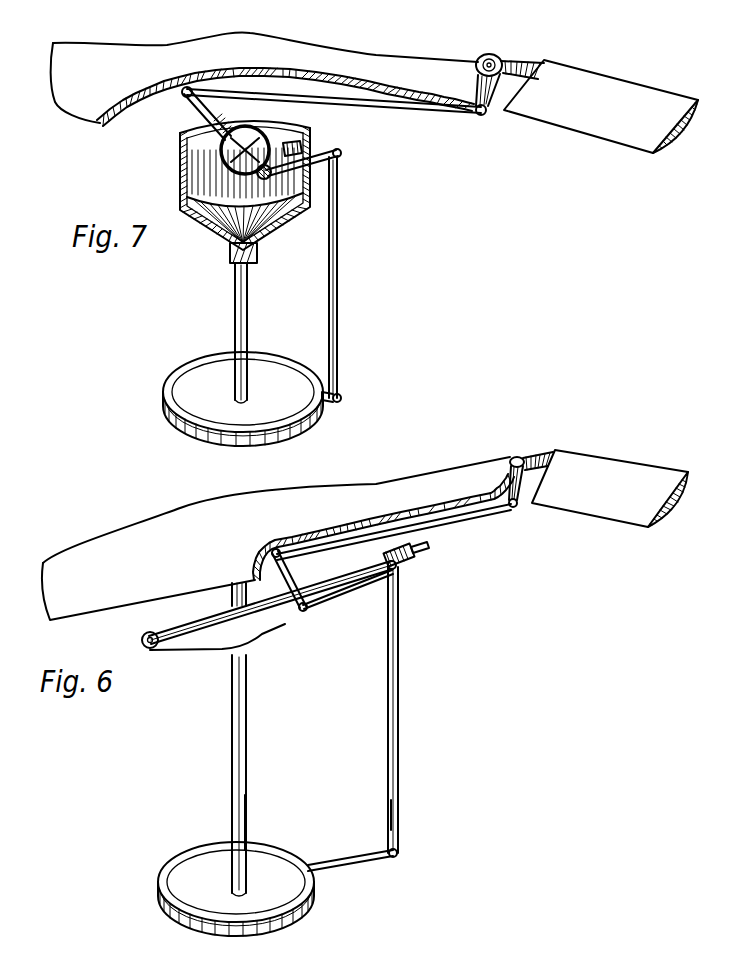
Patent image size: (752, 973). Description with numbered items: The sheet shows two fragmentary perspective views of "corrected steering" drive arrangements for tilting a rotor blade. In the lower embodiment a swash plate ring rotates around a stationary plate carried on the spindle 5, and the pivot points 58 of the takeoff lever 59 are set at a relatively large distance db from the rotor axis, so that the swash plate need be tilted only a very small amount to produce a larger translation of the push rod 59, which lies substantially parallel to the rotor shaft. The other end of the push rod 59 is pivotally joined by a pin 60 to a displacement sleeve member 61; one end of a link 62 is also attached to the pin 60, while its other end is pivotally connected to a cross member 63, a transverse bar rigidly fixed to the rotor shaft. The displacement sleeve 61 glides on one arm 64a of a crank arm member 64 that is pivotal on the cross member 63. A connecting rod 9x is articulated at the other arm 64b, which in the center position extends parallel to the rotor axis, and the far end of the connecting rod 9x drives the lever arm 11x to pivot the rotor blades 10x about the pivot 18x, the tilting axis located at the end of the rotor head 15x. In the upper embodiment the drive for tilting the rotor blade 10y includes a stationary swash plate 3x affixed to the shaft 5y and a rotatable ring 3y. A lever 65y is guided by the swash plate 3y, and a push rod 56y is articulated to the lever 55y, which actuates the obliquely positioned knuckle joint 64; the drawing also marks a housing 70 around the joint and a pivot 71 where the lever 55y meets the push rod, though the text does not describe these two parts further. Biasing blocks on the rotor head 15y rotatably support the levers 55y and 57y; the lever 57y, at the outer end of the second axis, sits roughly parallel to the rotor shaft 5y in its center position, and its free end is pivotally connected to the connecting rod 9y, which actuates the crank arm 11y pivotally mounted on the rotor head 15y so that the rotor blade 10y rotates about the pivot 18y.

In FIG. 7, the connecting rod 9y is at (315, 100).
In FIG. 7, the rotor head 15y is at (423, 80).
In FIG. 7, the pivot 18y is at (501, 62).
In FIG. 7, the rotor blade 10y is at (590, 95).
In FIG. 7, the crank arm 11y is at (489, 100).
In FIG. 7, the lever 57y is at (197, 123).
In FIG. 7, the housing 70 is at (173, 146).
In FIG. 7, the knuckle joint 64 is at (261, 133).
In FIG. 6, the knuckle joint 64 is at (307, 613).
In FIG. 7, the link pivot 71 is at (339, 152).
In FIG. 7, the lever 55y is at (333, 157).
In FIG. 7, the push rod 56y is at (339, 288).
In FIG. 7, the lever 65y is at (341, 397).
In FIG. 7, the shaft 5y is at (234, 306).
In FIG. 7, the rotatable ring 3y is at (163, 393).
In FIG. 7, the stationary swash plate 3x is at (217, 420).
In FIG. 6, the connecting rod 9x is at (353, 537).
In FIG. 6, the rotor head 15x is at (408, 487).
In FIG. 6, the lever arm 11x is at (509, 492).
In FIG. 6, the pivot 18x is at (518, 456).
In FIG. 6, the rotor blades 10x is at (582, 472).
In FIG. 6, the arm 64b is at (256, 565).
In FIG. 6, the displacement sleeve member 61 is at (421, 551).
In FIG. 6, the pin 60 is at (416, 563).
In FIG. 6, the takeoff lever 59 is at (399, 627).
In FIG. 6, the pivot points 58 is at (400, 853).
In FIG. 6, the arm 64a is at (348, 589).
In FIG. 6, the link 62 is at (178, 633).
In FIG. 6, the cross member 63 is at (220, 636).
In FIG. 6, the spindle 5 is at (237, 777).
In FIG. 6, the distance db is at (387, 818).